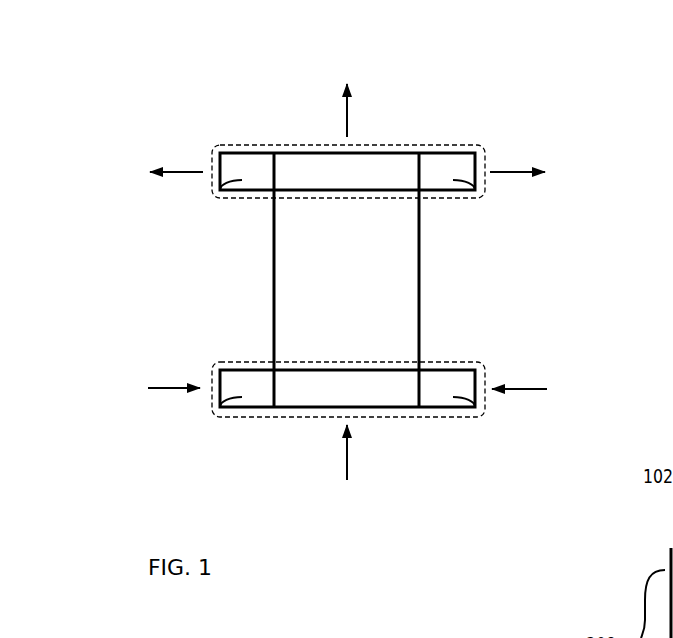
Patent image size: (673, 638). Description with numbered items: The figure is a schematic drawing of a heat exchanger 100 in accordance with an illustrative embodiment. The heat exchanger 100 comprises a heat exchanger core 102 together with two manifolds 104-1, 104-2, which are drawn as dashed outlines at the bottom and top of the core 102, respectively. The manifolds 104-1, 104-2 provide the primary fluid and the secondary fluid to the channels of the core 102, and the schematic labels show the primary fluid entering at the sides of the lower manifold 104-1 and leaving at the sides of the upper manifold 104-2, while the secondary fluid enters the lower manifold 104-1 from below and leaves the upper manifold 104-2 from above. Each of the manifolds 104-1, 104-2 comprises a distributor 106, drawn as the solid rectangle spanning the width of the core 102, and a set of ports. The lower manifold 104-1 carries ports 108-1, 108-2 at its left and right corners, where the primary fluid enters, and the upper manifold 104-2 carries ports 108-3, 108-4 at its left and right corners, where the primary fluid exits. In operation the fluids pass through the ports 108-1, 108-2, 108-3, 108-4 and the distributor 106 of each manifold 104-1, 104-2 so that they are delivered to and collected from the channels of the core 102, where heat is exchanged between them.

The heat exchanger 100 is at (121, 57).
The heat exchanger core 102 is at (362, 288).
The manifold 104-1 is at (400, 417).
The manifold 104-2 is at (400, 144).
The distributor 106 is at (362, 181).
The port 108-1 is at (220, 407).
The port 108-2 is at (475, 407).
The port 108-3 is at (220, 190).
The port 108-4 is at (475, 190).